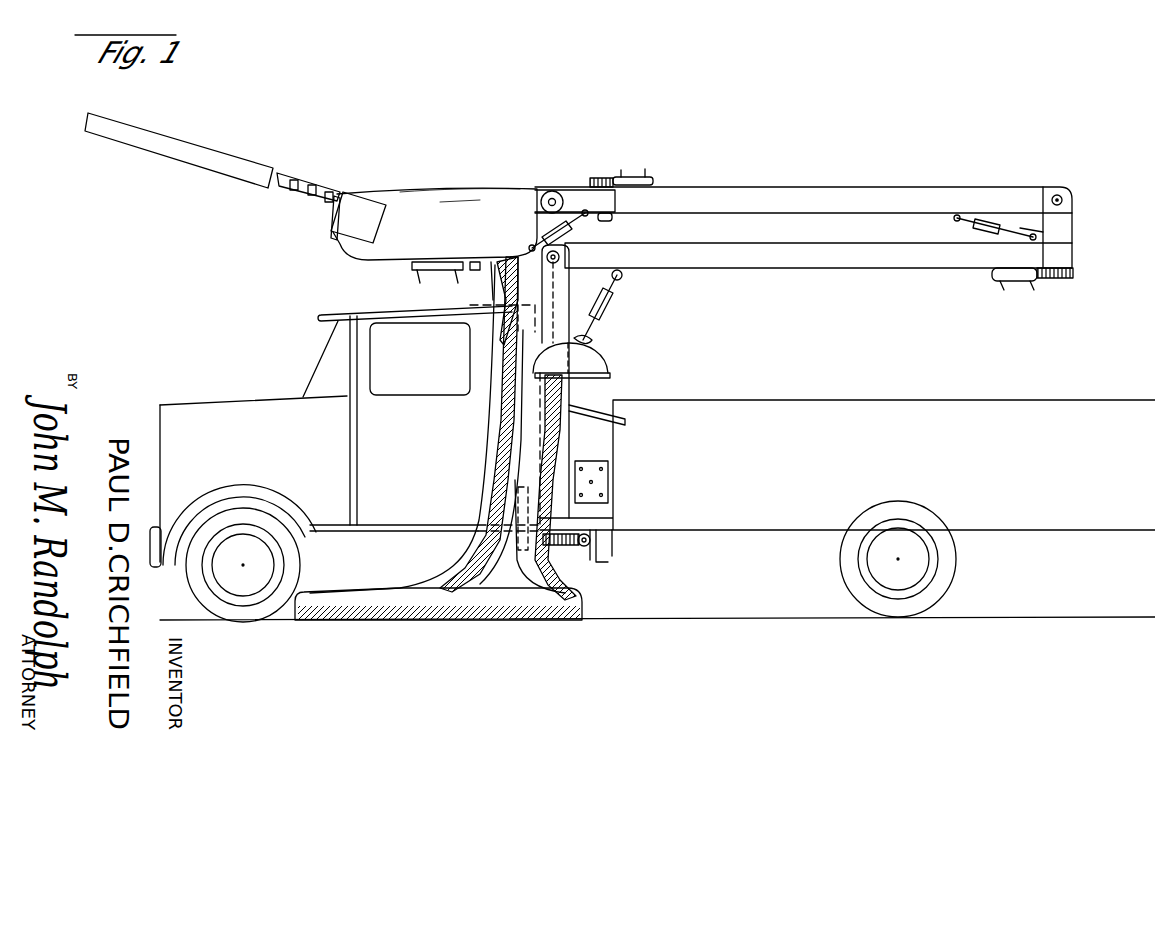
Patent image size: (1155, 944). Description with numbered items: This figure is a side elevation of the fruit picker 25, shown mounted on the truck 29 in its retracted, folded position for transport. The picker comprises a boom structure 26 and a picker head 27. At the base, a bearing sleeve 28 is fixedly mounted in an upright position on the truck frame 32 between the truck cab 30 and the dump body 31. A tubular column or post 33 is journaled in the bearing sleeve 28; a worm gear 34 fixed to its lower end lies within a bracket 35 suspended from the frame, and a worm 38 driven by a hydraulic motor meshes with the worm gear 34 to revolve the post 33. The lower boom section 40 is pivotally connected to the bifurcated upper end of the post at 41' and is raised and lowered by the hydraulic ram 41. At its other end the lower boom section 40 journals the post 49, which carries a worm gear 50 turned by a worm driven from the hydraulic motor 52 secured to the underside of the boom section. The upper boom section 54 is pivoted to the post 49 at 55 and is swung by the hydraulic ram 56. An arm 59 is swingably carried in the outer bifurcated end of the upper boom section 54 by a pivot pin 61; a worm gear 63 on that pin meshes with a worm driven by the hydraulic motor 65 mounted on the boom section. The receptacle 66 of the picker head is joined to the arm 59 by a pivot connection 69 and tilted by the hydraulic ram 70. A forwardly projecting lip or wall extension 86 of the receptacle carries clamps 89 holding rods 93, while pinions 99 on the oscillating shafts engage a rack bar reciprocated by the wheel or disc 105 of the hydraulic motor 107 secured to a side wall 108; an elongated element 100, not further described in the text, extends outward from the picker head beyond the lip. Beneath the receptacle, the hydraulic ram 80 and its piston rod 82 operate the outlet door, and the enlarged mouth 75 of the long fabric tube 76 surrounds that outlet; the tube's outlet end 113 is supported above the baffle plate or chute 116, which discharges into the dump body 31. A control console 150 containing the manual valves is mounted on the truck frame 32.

The fruit picker 25 is at (677, 143).
The boom structure 26 is at (636, 291).
The picker head 27 is at (381, 173).
The bearing sleeve 28 is at (565, 434).
The truck 29 is at (379, 526).
The truck cab 30 is at (354, 329).
The dump body 31 is at (863, 400).
The truck frame 32 is at (606, 527).
The column or post 33 is at (552, 308).
The worm gear 34 is at (550, 572).
The bracket 35 is at (604, 560).
The worm 38 is at (582, 548).
The lower boom section 40 is at (824, 266).
The hydraulic ram 41 is at (610, 309).
The pivotal connection 41' is at (574, 276).
The post 49 is at (1068, 232).
The worm gear 50 is at (1075, 274).
The hydraulic motor 52 is at (1016, 284).
The upper boom section 54 is at (824, 178).
The pivot 55 is at (1064, 200).
The hydraulic ram 56 is at (1010, 224).
The arm 59 is at (571, 188).
The pivot pin 61 is at (607, 221).
The worm gear 63 is at (598, 181).
The hydraulic motor 65 is at (634, 188).
The receptacle 66 is at (429, 185).
The pivot connection 69 is at (546, 196).
The hydraulic ram 70 is at (531, 236).
The mouth 75 is at (490, 268).
The fabric tube 76 is at (492, 458).
The hydraulic ram 80 is at (434, 262).
The piston rod 82 is at (472, 272).
The lip or wall extension 86 is at (306, 177).
The clamps 89 is at (312, 196).
The rods 93 is at (283, 187).
The pinions 99 is at (328, 201).
The control lever 100 is at (206, 141).
The wheel or disc 105 is at (336, 226).
The hydraulic motor 107 is at (376, 210).
The side wall 108 is at (450, 203).
The outlet end 113 is at (608, 379).
The baffle plate or chute 116 is at (625, 420).
The control console 150 is at (606, 494).